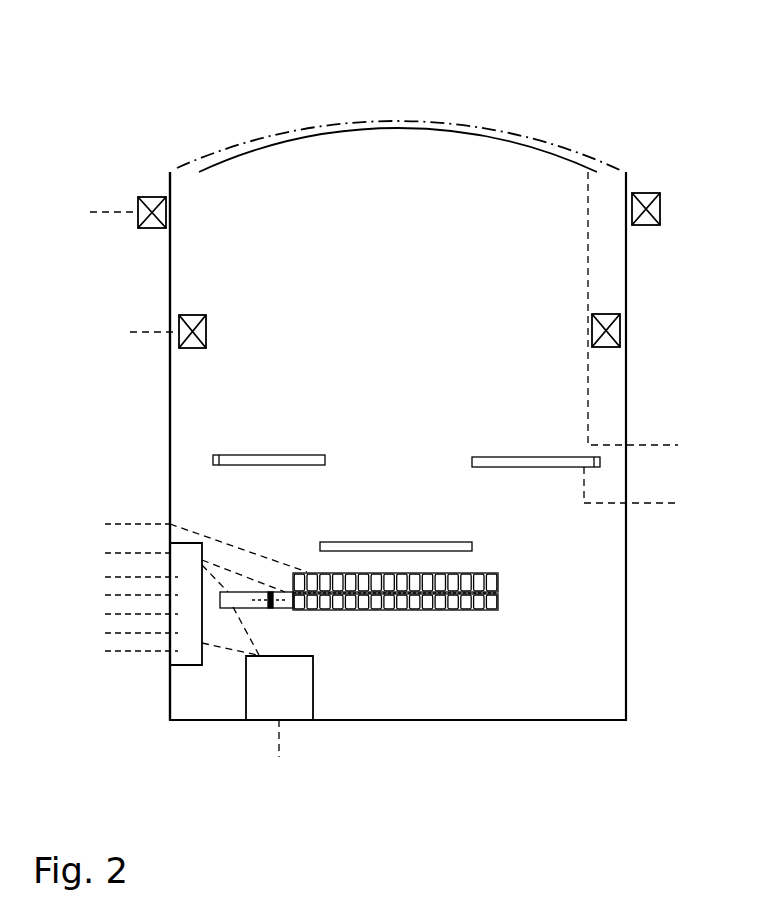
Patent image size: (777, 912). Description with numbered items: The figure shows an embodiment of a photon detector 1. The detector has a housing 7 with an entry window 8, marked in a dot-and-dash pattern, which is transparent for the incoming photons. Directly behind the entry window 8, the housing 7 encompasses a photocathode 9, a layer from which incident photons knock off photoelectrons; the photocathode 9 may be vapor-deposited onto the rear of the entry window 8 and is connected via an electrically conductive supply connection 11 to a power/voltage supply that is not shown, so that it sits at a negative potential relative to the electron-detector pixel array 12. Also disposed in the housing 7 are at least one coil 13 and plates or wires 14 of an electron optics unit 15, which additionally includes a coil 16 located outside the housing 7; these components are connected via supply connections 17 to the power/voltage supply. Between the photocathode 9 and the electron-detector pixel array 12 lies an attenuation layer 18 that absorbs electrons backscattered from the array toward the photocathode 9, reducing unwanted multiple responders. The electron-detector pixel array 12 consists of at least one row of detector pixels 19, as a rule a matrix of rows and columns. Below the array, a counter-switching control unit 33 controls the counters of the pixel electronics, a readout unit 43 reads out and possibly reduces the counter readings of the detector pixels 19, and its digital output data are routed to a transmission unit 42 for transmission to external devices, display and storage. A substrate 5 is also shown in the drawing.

The photon detector 1 is at (538, 108).
The substrate 5 is at (413, 600).
The housing 7 is at (169, 390).
The entry window 8 is at (315, 125).
The photocathode 9 is at (440, 130).
The supply connection 11 is at (588, 413).
The electron-detector pixel array 12 is at (508, 681).
The coil 13 is at (620, 329).
The plates or wires 14 is at (215, 458).
The electron optics unit 15 is at (600, 390).
The coil 16 is at (152, 199).
The supply connections 17 is at (122, 212).
The attenuation layer 18 is at (472, 546).
The detector pixels 19 is at (485, 582).
The counter-switching control unit 33 is at (298, 715).
The transmission unit 42 is at (182, 657).
The readout unit 43 is at (235, 606).